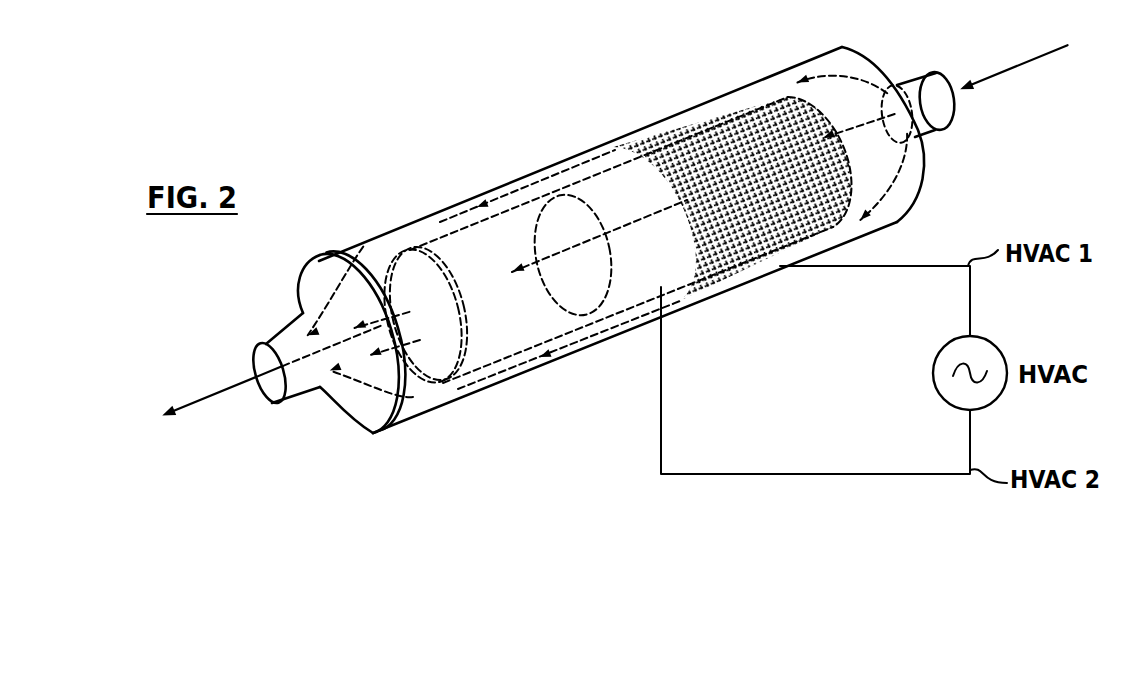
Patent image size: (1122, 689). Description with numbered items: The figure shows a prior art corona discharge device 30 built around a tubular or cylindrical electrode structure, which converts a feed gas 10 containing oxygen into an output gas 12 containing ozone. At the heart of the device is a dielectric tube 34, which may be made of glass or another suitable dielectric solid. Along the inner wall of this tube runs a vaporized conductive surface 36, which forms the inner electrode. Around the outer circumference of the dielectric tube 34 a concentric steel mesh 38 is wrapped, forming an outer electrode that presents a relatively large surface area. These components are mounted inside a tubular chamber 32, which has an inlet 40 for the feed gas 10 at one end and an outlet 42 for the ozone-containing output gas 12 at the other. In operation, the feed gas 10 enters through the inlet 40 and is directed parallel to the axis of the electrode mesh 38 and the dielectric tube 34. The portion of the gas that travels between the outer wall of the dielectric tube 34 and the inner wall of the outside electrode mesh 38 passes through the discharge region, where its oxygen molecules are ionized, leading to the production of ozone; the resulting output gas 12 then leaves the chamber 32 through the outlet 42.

The feed gas 10 is at (1023, 63).
The output gas 12 is at (212, 398).
The corona discharge device 30 is at (486, 151).
The tubular chamber 32 is at (353, 242).
The dielectric tube 34 is at (517, 360).
The vaporized conductive surface 36 is at (613, 200).
The steel mesh 38 is at (721, 112).
The inlet 40 is at (937, 131).
The outlet 42 is at (276, 333).